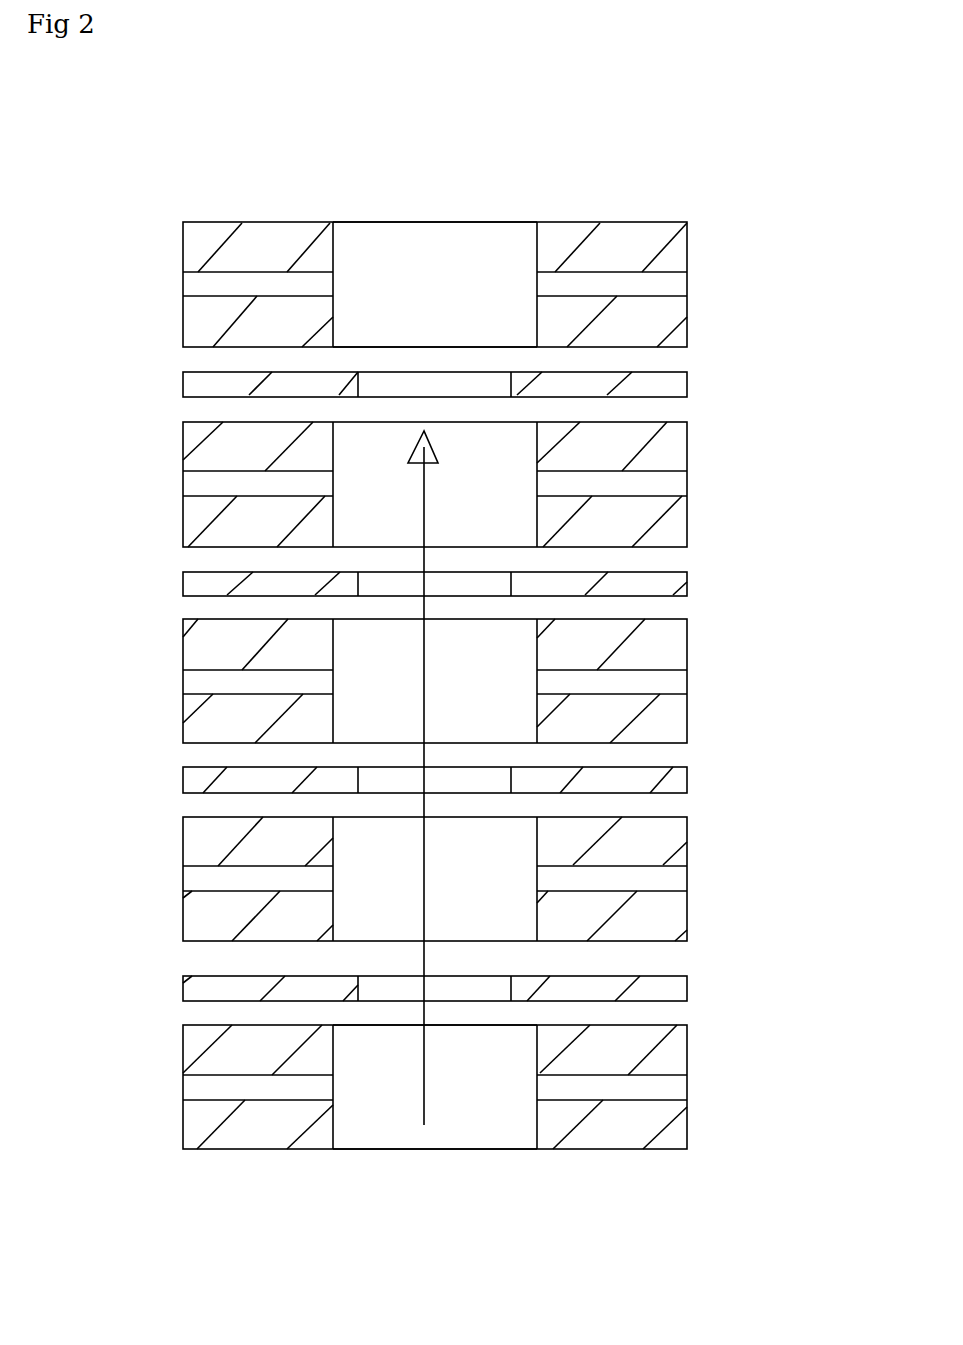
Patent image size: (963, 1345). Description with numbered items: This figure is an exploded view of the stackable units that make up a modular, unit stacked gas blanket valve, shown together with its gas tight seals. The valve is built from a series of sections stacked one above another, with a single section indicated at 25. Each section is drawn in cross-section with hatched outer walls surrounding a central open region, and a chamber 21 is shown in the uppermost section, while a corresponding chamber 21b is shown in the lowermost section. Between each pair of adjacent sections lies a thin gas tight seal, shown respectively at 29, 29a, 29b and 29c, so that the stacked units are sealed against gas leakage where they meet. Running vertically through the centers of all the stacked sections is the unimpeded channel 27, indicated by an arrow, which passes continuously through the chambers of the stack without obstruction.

The chamber 21 is at (526, 254).
The chamber 21b is at (486, 1137).
The single section 25 is at (204, 249).
The unimpeded channel 27 is at (347, 831).
The gas tight seal 29 is at (205, 385).
The gas tight seal 29a is at (200, 583).
The gas tight seal 29b is at (200, 779).
The gas tight seal 29c is at (185, 990).